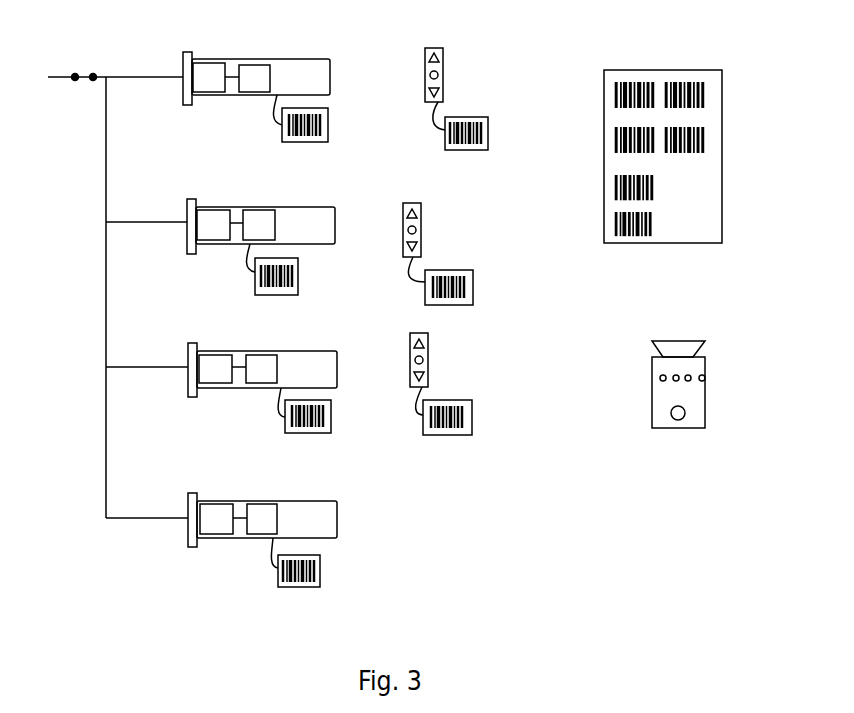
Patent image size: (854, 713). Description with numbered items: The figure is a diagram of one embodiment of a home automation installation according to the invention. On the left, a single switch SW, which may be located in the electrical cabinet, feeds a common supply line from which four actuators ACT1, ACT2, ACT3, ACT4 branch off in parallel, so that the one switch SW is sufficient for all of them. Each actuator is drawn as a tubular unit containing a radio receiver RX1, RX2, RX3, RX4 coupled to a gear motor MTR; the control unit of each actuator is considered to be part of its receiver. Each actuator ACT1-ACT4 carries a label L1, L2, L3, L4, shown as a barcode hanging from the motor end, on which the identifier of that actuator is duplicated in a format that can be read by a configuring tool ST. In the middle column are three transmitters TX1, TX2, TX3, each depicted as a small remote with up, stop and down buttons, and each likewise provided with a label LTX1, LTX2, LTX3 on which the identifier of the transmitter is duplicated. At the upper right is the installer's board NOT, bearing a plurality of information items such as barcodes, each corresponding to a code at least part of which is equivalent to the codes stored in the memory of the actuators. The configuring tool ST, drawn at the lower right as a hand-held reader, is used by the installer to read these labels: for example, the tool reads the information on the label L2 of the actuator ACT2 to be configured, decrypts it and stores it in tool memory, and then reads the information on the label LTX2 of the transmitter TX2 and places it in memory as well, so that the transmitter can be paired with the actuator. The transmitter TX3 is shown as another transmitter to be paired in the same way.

The switch SW is at (115, 66).
The actuator ACT1 is at (283, 61).
The actuator ACT2 is at (277, 211).
The actuator ACT3 is at (284, 355).
The actuator ACT4 is at (294, 504).
The radio receiver RX1 is at (210, 75).
The radio receiver RX2 is at (214, 223).
The radio receiver RX3 is at (215, 368).
The radio receiver RX4 is at (216, 516).
The gear motor MTR is at (253, 65).
The label L1 is at (330, 132).
The label L2 is at (298, 277).
The label L3 is at (331, 420).
The label L4 is at (320, 578).
The transmitter TX1 is at (443, 60).
The transmitter TX2 is at (421, 223).
The transmitter TX3 is at (428, 353).
The transmitter label LTX1 is at (488, 142).
The transmitter label LTX2 is at (473, 293).
The transmitter label LTX3 is at (472, 422).
The board NOT is at (660, 70).
The configuring tool ST is at (673, 428).